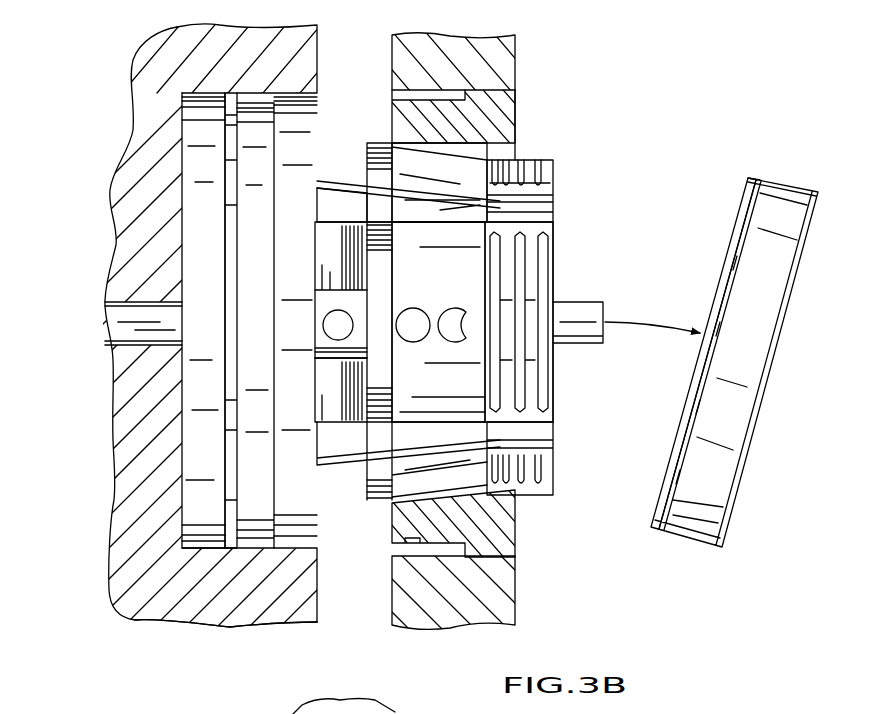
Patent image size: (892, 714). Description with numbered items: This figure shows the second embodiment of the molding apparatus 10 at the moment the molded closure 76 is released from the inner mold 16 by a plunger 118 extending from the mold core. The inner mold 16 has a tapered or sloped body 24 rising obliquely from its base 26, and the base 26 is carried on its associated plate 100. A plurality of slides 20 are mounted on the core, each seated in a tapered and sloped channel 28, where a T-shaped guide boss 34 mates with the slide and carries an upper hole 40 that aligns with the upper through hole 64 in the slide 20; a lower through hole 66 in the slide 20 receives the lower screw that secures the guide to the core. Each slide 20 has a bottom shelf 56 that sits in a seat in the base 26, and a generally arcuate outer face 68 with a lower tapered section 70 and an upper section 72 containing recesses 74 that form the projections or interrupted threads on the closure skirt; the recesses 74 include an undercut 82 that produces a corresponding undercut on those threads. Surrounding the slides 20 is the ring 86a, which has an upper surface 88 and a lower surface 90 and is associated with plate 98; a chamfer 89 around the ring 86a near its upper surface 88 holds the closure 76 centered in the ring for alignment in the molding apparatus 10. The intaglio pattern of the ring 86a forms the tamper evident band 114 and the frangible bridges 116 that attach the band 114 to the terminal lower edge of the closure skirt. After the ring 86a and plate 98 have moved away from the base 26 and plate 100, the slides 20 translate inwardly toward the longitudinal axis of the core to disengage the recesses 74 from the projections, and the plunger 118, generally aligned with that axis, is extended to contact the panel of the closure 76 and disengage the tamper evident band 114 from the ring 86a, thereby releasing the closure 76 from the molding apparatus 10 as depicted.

The molding apparatus 10 is at (82, 37).
The inner mold 16 is at (118, 206).
The slides 20 is at (440, 296).
The tapered or sloped body 24 is at (322, 256).
The base 26 is at (200, 283).
The channel 28 is at (330, 384).
The guide boss 34 is at (322, 306).
The upper hole 40 is at (324, 348).
The bottom shelf 56 is at (370, 208).
The upper through hole 64 is at (455, 340).
The lower through hole 66 is at (413, 342).
The arcuate outer face 68 is at (428, 402).
The lower tapered section 70 is at (422, 228).
The upper section 72 is at (556, 202).
The recesses 74 is at (542, 160).
The closure 76 is at (768, 364).
The undercut 82 is at (512, 490).
The ring 86a is at (514, 110).
The upper surface 88 is at (548, 118).
The chamfer 89 is at (514, 500).
The lower surface 90 is at (392, 540).
The plate 98 is at (482, 47).
The plate 100 is at (216, 614).
The tamper evident band 114 is at (750, 176).
The frangible bridges 116 is at (730, 276).
The plunger 118 is at (112, 330).